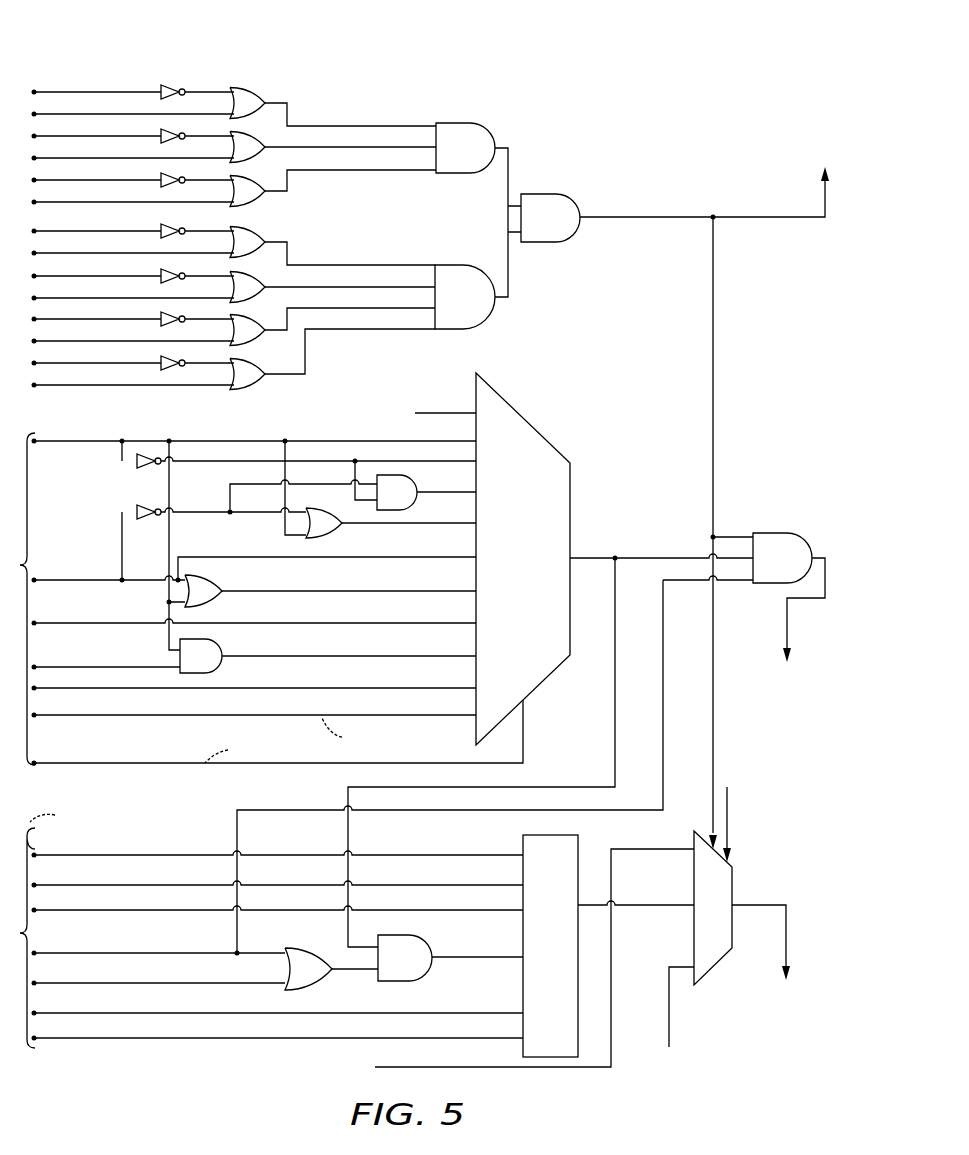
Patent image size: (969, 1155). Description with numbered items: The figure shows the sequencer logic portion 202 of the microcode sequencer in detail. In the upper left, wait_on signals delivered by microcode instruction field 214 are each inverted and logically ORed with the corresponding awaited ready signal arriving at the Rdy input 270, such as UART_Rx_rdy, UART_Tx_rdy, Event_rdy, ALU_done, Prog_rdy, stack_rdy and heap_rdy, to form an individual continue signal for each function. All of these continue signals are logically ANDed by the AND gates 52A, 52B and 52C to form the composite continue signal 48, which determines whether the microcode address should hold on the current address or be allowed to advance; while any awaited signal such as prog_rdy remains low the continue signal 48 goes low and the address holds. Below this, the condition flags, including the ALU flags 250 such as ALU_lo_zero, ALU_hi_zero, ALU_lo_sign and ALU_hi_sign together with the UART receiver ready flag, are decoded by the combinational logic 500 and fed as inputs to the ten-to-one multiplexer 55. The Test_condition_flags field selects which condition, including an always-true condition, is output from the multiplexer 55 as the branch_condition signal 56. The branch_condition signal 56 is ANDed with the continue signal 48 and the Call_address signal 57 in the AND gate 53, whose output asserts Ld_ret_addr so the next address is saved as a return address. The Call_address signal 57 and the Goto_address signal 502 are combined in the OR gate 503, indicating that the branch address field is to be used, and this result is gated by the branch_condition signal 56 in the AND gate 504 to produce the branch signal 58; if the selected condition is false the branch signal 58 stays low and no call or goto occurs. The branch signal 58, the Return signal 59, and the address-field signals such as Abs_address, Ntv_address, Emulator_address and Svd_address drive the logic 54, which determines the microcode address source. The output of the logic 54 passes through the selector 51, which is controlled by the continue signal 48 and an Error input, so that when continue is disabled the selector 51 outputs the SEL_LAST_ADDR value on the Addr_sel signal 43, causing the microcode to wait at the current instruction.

The sequencer logic portion 202 is at (700, 62).
The microcode instruction field 214 is at (78, 73).
The Rdy input 270 is at (203, 82).
The ALU flags 250 is at (235, 245).
The AND gate 52A is at (470, 133).
The AND gate 52B is at (492, 304).
The AND gate 52C is at (548, 208).
The continue signal 48 is at (600, 220).
The combinational logic 500 is at (297, 419).
The multiplexer 55 is at (520, 453).
The branch_condition signal 56 is at (583, 568).
The AND gate 53 is at (790, 547).
The Call_address signal 57 is at (293, 805).
The logic 54 is at (580, 840).
The OR gate 503 is at (305, 948).
The Goto_address signal 502 is at (218, 986).
The Return signal 59 is at (322, 1002).
The AND gate 504 is at (412, 968).
The branch signal 58 is at (455, 960).
The selector 51 is at (710, 965).
The Addr_sel signal 43 is at (757, 900).